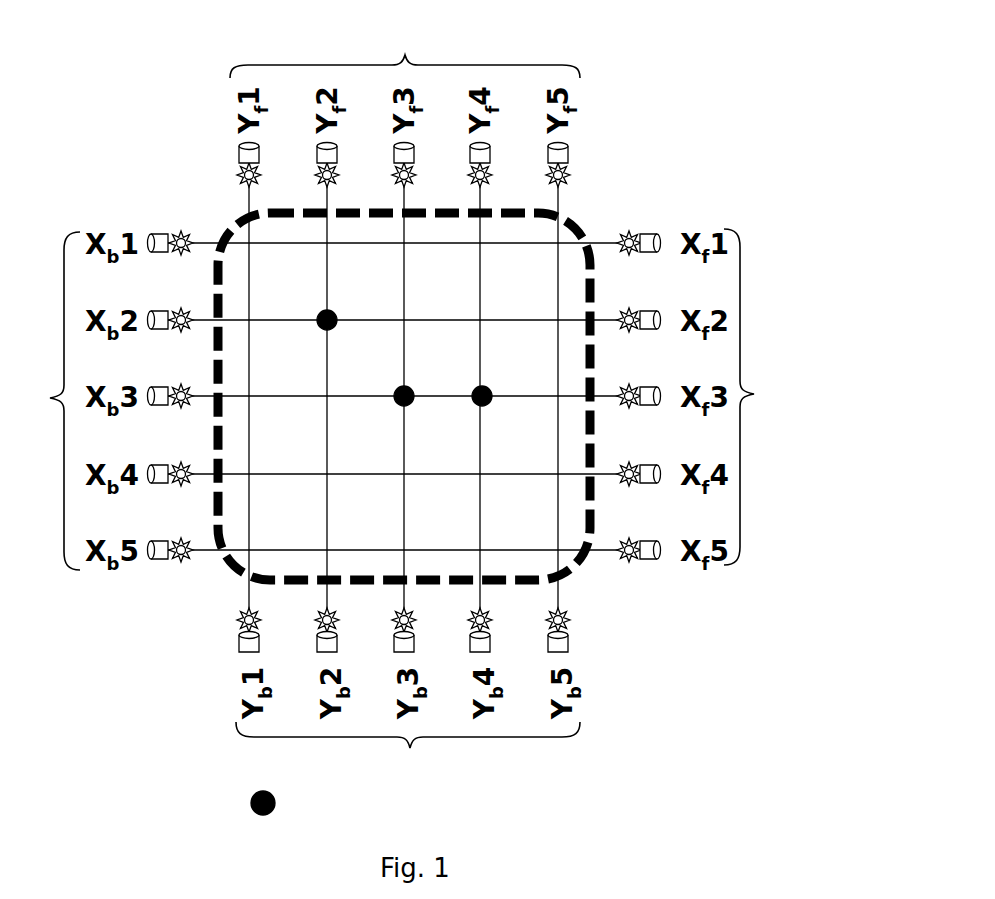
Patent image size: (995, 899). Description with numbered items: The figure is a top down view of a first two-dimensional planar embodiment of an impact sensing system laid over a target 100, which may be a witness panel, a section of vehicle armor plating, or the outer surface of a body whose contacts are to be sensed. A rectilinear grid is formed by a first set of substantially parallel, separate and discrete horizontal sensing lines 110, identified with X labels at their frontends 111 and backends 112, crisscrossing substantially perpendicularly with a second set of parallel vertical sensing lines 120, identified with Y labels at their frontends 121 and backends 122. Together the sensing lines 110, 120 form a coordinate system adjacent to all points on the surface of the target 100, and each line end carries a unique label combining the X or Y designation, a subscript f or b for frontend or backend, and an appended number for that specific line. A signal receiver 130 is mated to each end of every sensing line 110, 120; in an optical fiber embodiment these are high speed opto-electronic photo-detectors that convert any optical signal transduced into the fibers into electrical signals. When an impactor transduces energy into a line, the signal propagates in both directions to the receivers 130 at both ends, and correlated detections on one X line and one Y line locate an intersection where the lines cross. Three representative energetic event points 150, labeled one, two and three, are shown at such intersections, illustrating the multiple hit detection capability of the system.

The target 100 is at (226, 225).
The horizontal sensing lines 110 is at (207, 252).
The X frontend labels 111 is at (761, 397).
The X backend labels 112 is at (48, 401).
The vertical sensing lines 120 is at (244, 597).
The Y frontend labels 121 is at (405, 51).
The Y backend labels 122 is at (408, 751).
The signal receivers 130 is at (648, 231).
The intersections 150 is at (483, 383).